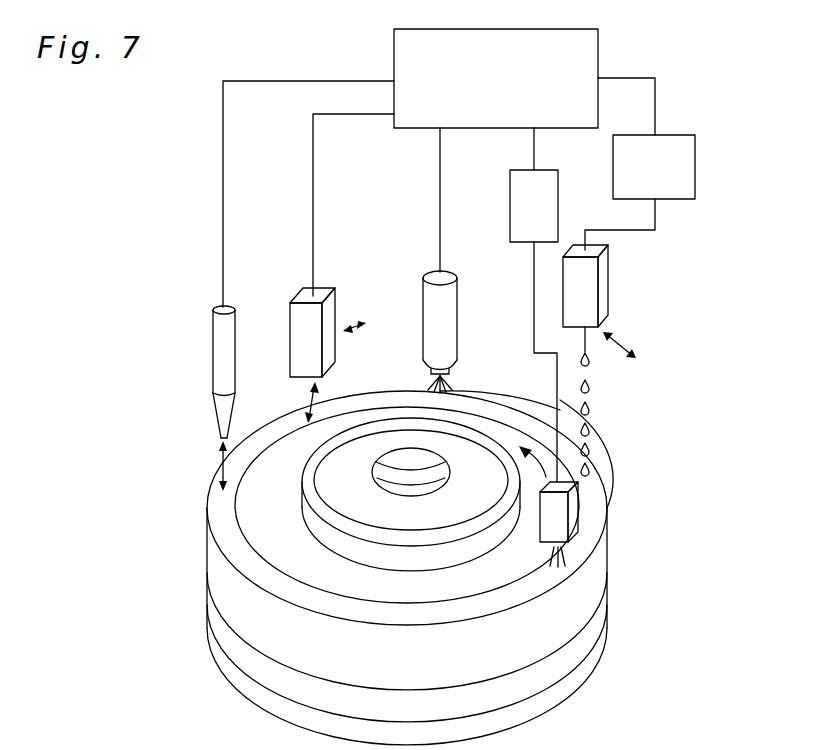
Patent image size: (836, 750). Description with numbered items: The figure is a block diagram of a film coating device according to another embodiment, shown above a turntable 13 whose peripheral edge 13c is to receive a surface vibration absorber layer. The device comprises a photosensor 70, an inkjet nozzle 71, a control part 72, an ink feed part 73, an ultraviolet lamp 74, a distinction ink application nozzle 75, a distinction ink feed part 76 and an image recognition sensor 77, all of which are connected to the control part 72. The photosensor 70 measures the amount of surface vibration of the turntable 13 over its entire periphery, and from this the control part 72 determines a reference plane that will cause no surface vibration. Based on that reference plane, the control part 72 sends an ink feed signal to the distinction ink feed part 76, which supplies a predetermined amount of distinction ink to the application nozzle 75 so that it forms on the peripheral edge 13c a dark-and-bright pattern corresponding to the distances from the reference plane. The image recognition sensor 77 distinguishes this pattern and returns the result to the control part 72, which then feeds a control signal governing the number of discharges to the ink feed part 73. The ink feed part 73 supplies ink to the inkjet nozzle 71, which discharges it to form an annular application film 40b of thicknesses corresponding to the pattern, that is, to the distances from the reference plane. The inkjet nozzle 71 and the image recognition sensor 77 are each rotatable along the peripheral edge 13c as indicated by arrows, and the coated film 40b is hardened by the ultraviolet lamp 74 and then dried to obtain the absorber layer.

The turntable 13 is at (510, 557).
The peripheral edge of the turntable 13c is at (607, 483).
The annular application film 40b is at (512, 415).
The photosensor 70 is at (225, 345).
The inkjet nozzle 71 is at (603, 292).
The control part 72 is at (582, 53).
The ink feed part 73 is at (695, 158).
The ultraviolet lamp 74 is at (457, 315).
The distinction ink application nozzle 75 is at (573, 510).
The distinction ink feed part 76 is at (558, 195).
The image recognition sensor 77 is at (330, 318).